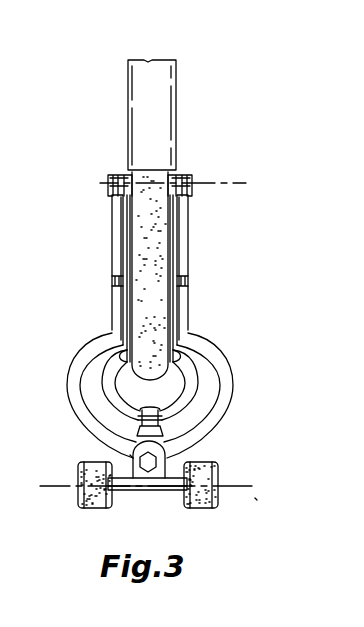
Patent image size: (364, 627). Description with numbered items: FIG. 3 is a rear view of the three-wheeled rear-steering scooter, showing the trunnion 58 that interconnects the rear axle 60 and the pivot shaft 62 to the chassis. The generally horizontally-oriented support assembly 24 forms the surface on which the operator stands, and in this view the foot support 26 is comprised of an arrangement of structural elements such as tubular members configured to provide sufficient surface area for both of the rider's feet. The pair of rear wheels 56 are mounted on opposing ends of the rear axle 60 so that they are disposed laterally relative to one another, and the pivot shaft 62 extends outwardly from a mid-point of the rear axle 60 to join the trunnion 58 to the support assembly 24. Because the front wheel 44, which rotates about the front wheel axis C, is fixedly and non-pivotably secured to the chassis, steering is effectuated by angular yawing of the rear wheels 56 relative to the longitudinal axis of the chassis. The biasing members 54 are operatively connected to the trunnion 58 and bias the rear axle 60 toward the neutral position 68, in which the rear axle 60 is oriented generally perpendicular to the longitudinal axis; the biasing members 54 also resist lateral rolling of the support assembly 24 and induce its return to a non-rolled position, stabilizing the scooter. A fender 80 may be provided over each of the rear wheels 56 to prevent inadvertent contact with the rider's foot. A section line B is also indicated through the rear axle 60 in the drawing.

The fender 80 is at (176, 83).
The front wheel 44 is at (152, 218).
The support assembly 24 is at (194, 332).
The foot support 26 is at (196, 374).
The pivot shaft 62 is at (163, 433).
The biasing members 54 is at (166, 458).
The trunnion 58 is at (110, 457).
The rear axle 60 is at (140, 491).
The rear wheels 56 is at (93, 509).
The neutral position 68 is at (252, 496).
The front wheel axis C is at (228, 183).
The section line B is at (252, 484).